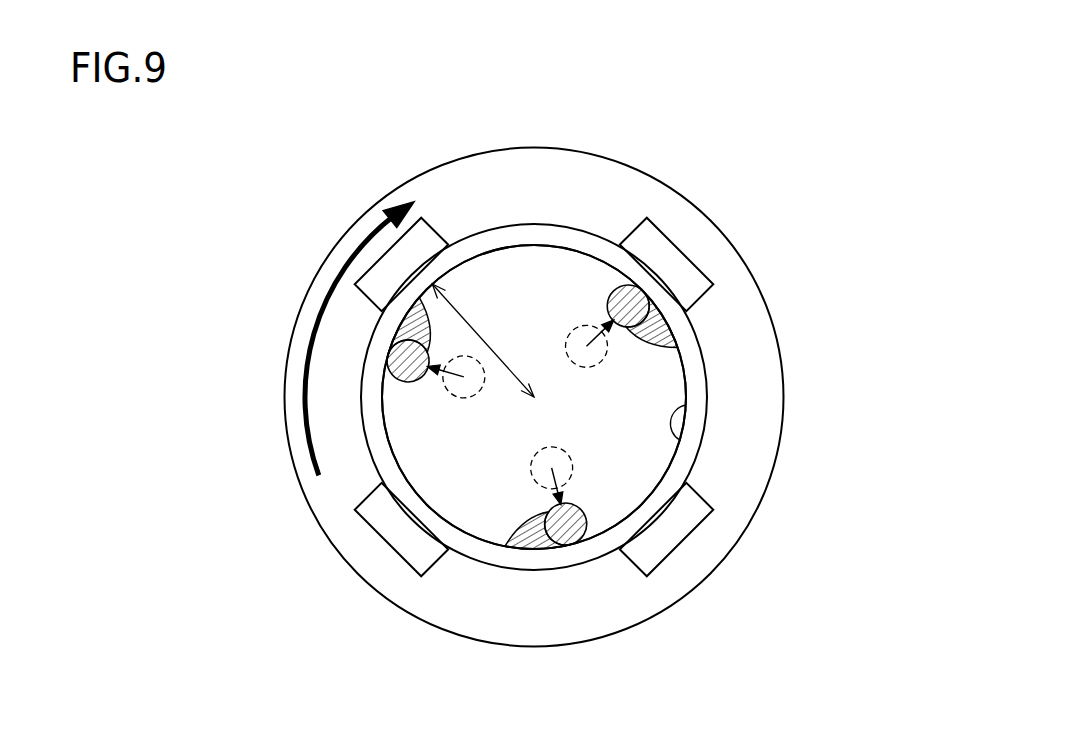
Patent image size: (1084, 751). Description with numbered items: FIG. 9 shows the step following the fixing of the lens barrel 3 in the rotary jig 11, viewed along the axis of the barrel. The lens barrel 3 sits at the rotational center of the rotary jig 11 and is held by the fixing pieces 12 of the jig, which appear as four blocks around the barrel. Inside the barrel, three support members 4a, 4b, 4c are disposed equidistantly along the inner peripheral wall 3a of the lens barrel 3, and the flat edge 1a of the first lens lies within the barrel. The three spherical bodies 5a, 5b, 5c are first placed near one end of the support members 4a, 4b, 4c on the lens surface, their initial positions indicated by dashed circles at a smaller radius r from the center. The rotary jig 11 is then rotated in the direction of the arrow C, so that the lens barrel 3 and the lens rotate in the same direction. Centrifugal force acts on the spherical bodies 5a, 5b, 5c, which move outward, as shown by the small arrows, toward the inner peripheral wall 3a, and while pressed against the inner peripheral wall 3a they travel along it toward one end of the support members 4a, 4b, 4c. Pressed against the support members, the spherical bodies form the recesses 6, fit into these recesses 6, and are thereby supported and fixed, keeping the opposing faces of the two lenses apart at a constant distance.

The rotary jig 11 is at (446, 159).
The fixing pieces 12 is at (397, 263).
The flat edge 1a is at (557, 263).
The lens barrel 3 is at (697, 355).
The inner peripheral wall 3a is at (685, 448).
The support member 4a is at (397, 328).
The support member 4b is at (670, 340).
The support member 4c is at (517, 550).
The spherical body 5a is at (405, 381).
The spherical body 5b is at (624, 286).
The spherical body 5c is at (577, 543).
The recess 6 is at (388, 366).
The direction of the arrow C is at (310, 341).
The radius r is at (483, 340).